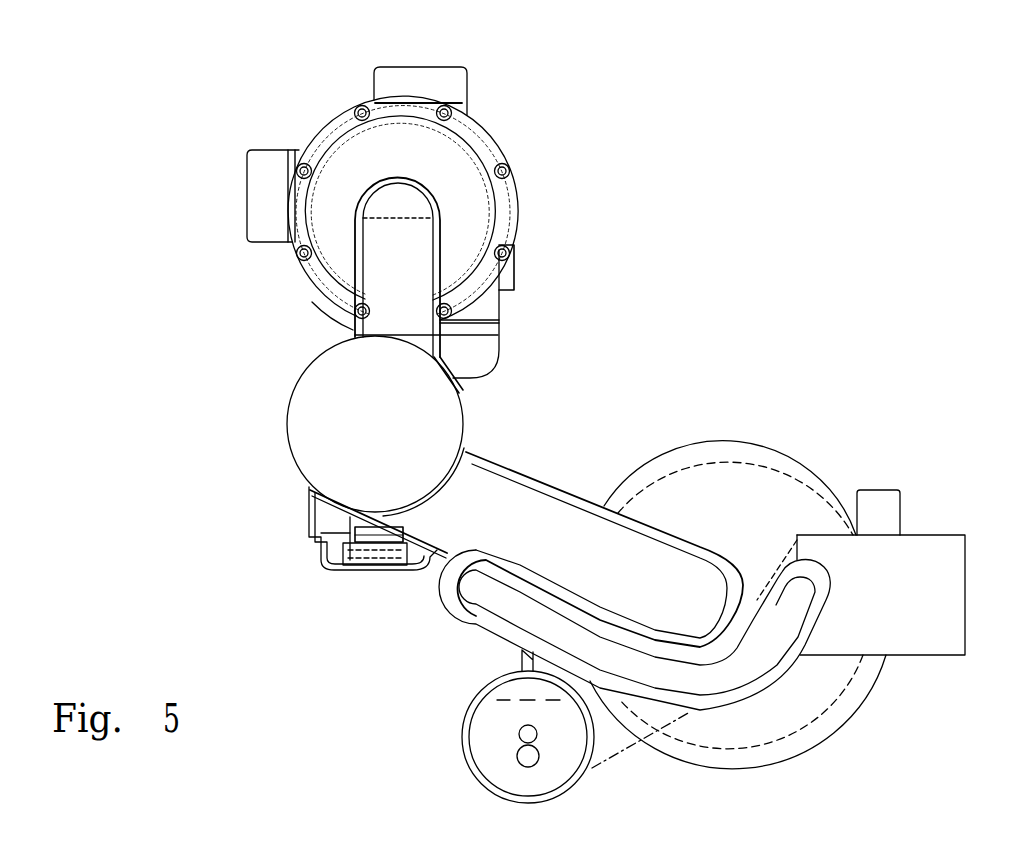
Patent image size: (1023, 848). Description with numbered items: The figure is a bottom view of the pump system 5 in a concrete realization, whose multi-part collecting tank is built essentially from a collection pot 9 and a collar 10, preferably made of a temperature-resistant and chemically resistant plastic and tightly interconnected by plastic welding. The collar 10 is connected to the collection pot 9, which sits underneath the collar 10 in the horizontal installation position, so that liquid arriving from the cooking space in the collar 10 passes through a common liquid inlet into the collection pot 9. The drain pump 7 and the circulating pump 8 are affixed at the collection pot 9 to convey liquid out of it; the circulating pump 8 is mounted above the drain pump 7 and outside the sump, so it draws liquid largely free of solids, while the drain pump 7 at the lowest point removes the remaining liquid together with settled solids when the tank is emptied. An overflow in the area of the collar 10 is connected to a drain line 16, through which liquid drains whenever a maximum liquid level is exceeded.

The pump system 5 is at (819, 194).
The drain pump 7 is at (291, 570).
The circulating pump 8 is at (539, 145).
The collection pot 9 is at (320, 449).
The collar 10 is at (701, 434).
The drain line 16 is at (938, 633).